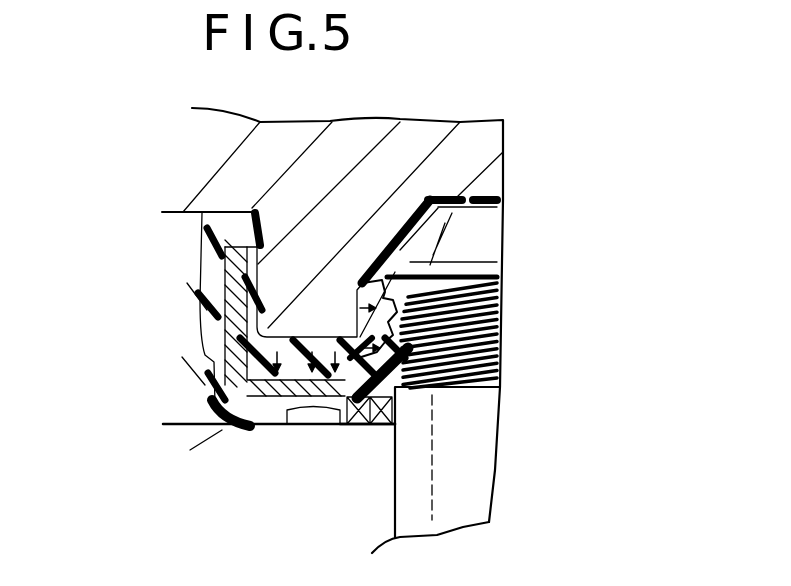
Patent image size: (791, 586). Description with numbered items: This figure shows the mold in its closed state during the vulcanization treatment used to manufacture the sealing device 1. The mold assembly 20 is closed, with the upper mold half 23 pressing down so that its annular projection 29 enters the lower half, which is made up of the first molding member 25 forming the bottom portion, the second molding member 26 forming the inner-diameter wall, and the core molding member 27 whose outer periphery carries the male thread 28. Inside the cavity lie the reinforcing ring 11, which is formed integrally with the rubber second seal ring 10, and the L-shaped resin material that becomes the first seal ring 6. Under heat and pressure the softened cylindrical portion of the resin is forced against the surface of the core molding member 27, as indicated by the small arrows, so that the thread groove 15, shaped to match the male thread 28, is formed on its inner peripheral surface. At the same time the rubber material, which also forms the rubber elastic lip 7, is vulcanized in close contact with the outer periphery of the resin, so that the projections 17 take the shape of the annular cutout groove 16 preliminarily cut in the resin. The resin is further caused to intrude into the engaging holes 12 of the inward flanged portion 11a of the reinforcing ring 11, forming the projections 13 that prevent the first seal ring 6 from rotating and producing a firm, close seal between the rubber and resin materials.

The sealing device 1 is at (188, 265).
The first seal ring 6 is at (365, 427).
The rubber elastic lip 7 is at (375, 256).
The second seal ring 10 is at (274, 318).
The reinforcing ring 11 is at (222, 333).
The inward flanged portion 11a is at (260, 427).
The engaging holes 12 is at (352, 427).
The projections 13 is at (308, 427).
The thread groove 15 is at (446, 372).
The cutout groove 16 is at (437, 272).
The projections 17 is at (349, 280).
The mold assembly 20 is at (524, 208).
The upper mold half 23 is at (461, 121).
The first molding member 25 is at (190, 426).
The second molding member 26 is at (188, 217).
The core molding member 27 is at (467, 482).
The male thread 28 is at (495, 288).
The annular projection 29 is at (207, 290).